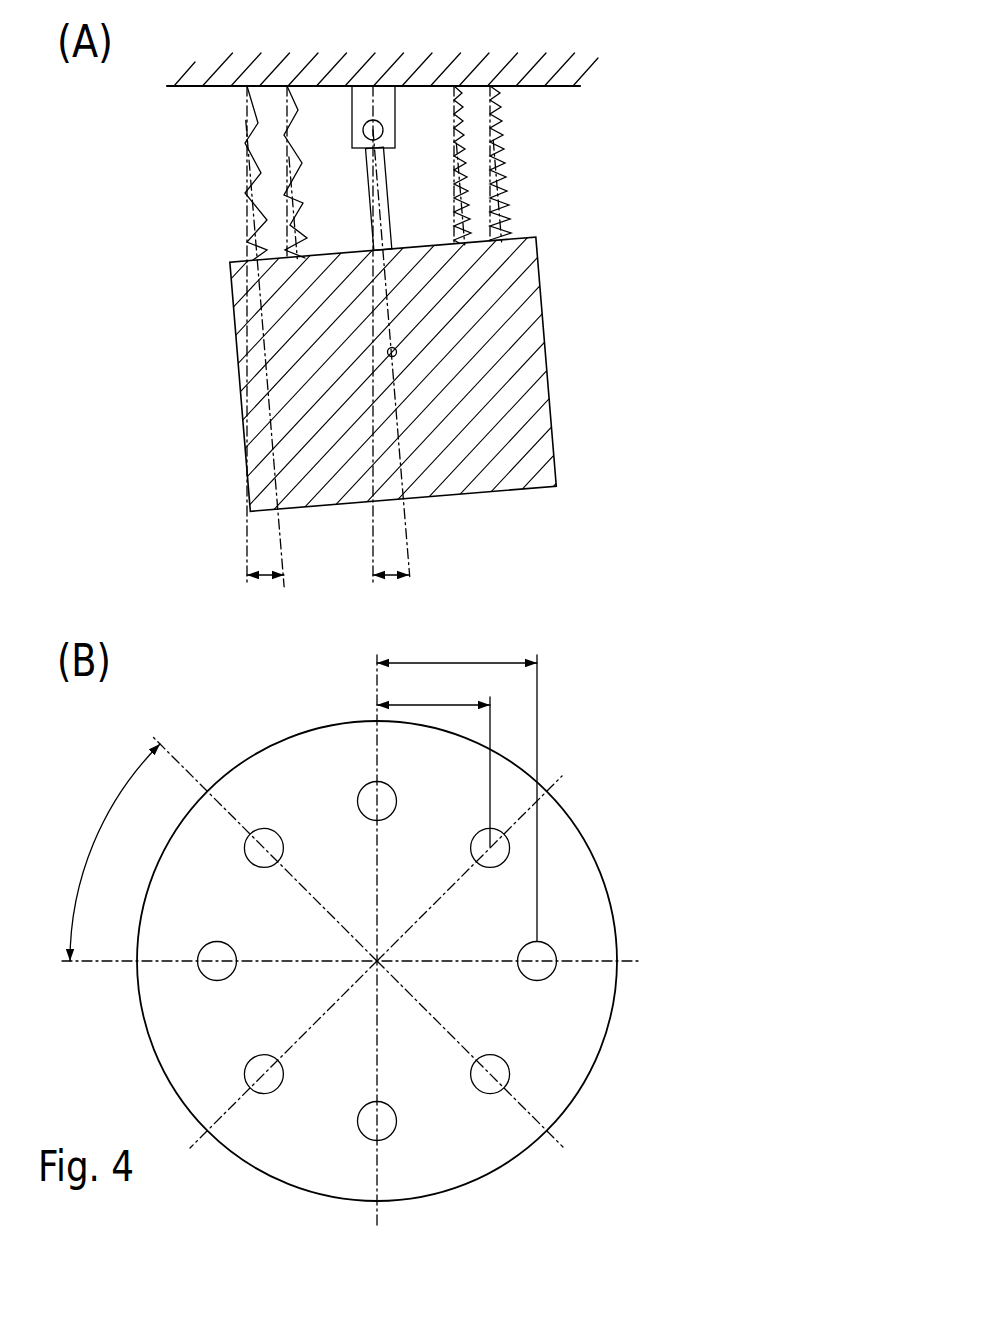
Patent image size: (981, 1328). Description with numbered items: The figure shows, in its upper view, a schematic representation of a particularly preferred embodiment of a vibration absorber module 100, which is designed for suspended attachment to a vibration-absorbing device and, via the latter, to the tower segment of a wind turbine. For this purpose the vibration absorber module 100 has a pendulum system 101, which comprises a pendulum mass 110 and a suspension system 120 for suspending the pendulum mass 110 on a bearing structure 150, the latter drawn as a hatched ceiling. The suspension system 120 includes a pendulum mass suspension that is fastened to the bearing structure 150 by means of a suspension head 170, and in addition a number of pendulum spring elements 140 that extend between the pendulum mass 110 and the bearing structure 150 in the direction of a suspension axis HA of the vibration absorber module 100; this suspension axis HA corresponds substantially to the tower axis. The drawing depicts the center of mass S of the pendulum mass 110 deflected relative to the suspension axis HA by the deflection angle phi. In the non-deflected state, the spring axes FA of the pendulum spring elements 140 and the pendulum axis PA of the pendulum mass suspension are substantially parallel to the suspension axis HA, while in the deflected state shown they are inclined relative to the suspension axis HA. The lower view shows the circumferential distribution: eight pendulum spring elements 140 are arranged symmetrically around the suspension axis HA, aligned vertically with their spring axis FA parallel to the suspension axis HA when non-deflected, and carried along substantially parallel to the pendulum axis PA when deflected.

The vibration absorber module 100 is at (665, 128).
The pendulum system 101 is at (198, 257).
The pendulum mass 110 is at (388, 184).
The suspension system 120 is at (198, 171).
The pendulum spring elements 140 is at (505, 163).
The bearing structure 150 is at (293, 68).
The suspension head 170 is at (383, 106).
The spring axis FA is at (245, 128).
The pendulum axis PA is at (372, 249).
The suspension axis HA is at (258, 557).
The center of mass S is at (397, 352).